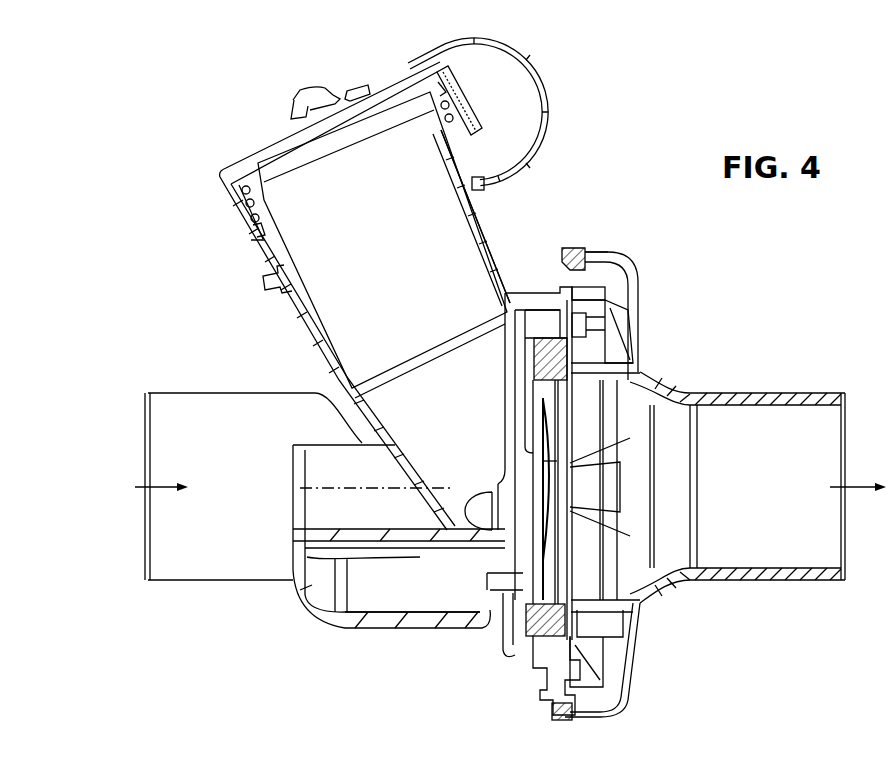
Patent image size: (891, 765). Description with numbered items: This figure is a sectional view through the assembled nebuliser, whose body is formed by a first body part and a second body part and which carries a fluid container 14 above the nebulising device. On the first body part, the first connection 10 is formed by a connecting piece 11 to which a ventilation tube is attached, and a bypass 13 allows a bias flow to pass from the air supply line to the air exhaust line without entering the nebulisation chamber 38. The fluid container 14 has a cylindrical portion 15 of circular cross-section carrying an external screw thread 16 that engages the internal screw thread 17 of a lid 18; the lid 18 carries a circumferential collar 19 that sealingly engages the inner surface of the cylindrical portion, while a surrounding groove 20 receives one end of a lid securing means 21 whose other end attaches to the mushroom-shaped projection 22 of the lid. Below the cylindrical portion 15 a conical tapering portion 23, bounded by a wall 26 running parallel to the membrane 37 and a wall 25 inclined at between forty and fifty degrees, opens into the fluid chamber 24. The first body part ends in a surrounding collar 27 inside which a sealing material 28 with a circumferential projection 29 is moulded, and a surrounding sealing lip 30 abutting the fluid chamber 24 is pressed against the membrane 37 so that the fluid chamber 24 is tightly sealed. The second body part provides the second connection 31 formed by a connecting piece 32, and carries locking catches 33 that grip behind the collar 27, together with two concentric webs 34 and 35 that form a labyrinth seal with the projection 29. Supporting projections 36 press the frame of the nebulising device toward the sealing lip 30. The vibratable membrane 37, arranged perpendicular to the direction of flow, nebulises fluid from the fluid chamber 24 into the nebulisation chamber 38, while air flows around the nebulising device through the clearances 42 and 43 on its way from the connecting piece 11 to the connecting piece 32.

The first connection 10 is at (190, 374).
The connecting piece 11 is at (206, 576).
The bypass 13 is at (360, 588).
The fluid container 14 is at (580, 168).
The cylindrical portion 15 is at (512, 255).
The external screw thread 16 is at (242, 208).
The internal screw thread 17 is at (242, 248).
The lid 18 is at (475, 102).
The circumferential collar 19 is at (437, 86).
The surrounding groove 20 is at (485, 187).
The lid securing means 21 is at (549, 93).
The mushroom-shaped projection 22 is at (318, 96).
The tapering portion 23 is at (443, 437).
The fluid chamber 24 is at (480, 515).
The wall 25 is at (395, 470).
The wall 26 is at (520, 355).
The surrounding collar 27 is at (600, 260).
The sealing material 28 is at (522, 298).
The circumferential projection 29 is at (590, 318).
The sealing lip 30 is at (510, 576).
The second connection 31 is at (775, 386).
The connecting piece 32 is at (765, 585).
The locking catches 33 is at (582, 250).
The web 34 is at (576, 293).
The web 35 is at (610, 312).
The supporting projections 36 is at (612, 496).
The membrane 37 is at (556, 466).
The nebulisation chamber 38 is at (560, 517).
The clearance 42 is at (508, 630).
The clearance 43 is at (527, 655).